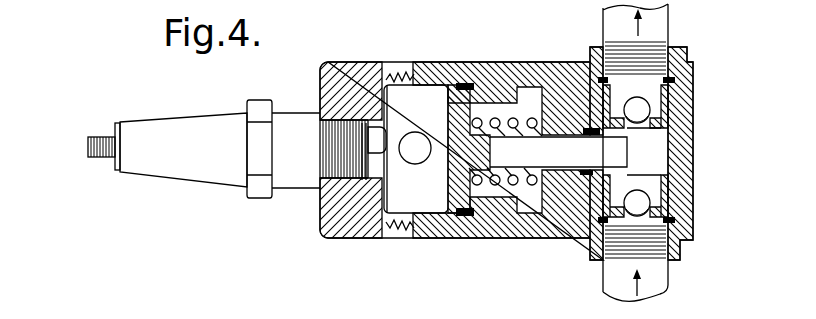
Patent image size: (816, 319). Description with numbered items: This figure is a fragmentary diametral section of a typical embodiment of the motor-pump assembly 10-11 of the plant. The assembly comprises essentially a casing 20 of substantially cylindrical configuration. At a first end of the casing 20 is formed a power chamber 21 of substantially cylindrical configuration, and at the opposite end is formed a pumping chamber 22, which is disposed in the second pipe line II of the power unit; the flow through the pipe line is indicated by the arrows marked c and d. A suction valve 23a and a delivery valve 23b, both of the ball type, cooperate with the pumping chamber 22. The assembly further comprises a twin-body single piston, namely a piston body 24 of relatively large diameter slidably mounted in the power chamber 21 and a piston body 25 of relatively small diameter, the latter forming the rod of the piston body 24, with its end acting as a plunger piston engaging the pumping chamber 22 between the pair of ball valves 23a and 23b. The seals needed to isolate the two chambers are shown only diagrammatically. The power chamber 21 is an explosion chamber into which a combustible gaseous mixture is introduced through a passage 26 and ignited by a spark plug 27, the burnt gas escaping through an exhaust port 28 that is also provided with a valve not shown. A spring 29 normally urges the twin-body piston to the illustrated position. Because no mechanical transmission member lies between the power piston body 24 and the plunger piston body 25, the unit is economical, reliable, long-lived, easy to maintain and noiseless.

The motor-pump assembly 10-11 is at (441, 242).
The casing 20 is at (506, 232).
The power chamber 21 is at (380, 192).
The pumping chamber 22 is at (653, 158).
The suction valve 23a is at (648, 204).
The delivery valve 23b is at (650, 109).
The piston body 24 is at (460, 190).
The piston body 25 is at (558, 147).
The passage 26 is at (328, 97).
The spark plug 27 is at (285, 176).
The exhaust port 28 is at (413, 131).
The spring 29 is at (493, 121).
The second pipe line II is at (661, 20).
The inlet flow c is at (635, 283).
The outlet flow d is at (635, 25).